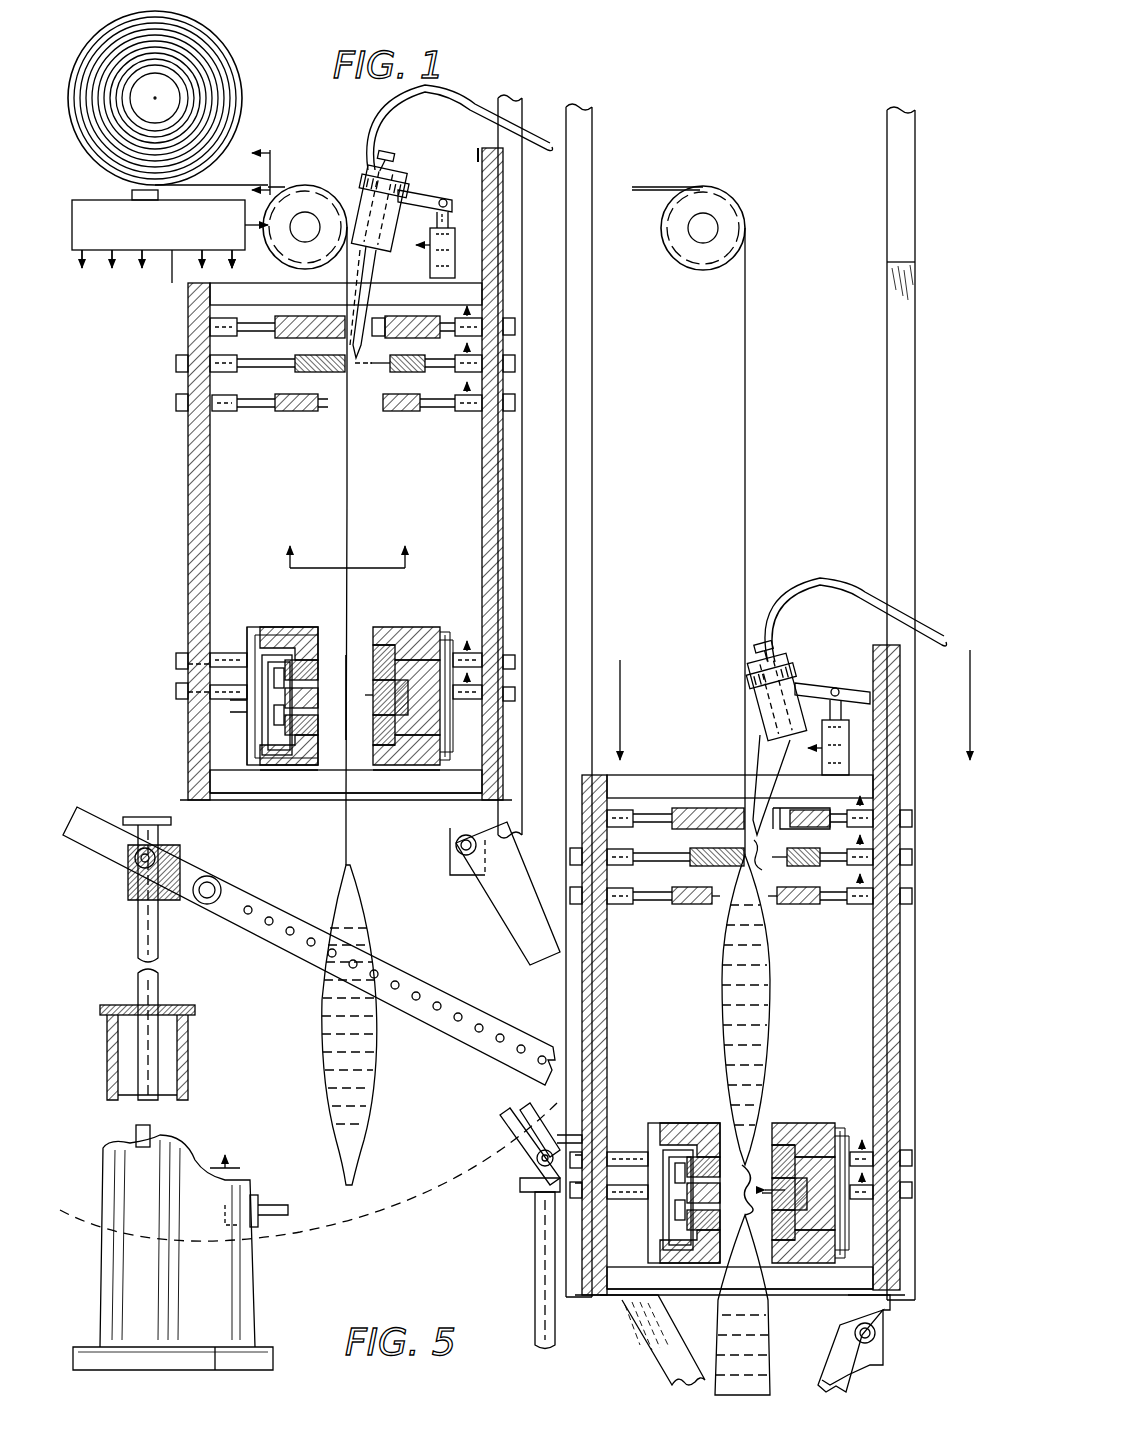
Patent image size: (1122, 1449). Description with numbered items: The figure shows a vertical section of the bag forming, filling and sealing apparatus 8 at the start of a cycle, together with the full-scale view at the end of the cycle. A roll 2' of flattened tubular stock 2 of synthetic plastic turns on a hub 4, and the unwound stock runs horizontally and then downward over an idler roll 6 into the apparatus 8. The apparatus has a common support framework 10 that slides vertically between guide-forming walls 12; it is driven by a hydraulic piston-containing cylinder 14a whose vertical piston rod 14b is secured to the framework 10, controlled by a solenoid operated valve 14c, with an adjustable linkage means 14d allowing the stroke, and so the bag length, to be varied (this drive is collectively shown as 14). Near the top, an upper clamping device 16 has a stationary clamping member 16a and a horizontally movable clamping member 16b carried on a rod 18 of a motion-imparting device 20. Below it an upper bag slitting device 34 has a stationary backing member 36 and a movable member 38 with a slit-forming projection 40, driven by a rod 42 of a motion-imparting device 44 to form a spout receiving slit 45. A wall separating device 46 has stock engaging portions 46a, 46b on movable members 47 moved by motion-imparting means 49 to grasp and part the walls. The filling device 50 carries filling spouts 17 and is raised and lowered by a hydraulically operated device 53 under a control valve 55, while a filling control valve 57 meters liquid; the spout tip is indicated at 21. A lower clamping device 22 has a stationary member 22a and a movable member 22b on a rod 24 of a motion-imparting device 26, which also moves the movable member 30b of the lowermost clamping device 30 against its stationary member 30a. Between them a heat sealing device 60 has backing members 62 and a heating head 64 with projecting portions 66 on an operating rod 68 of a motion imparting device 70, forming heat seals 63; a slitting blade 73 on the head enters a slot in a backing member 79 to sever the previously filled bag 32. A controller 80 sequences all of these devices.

In FIG. 1, the roll 2' is at (151, 98).
In FIG. 1, the hub 4 is at (160, 82).
In FIG. 1, the flattened tubular stock 2 is at (251, 512).
In FIG. 5, the flattened tubular stock 2 is at (795, 521).
In FIG. 1, the idler roll 6 is at (265, 270).
In FIG. 5, the idler roll 6 is at (705, 270).
In FIG. 1, the controller 80 is at (100, 270).
In FIG. 1, the bag forming, filling and sealing apparatus 8 is at (185, 283).
In FIG. 5, the bag forming, filling and sealing apparatus 8 is at (628, 772).
In FIG. 1, the support framework 10 is at (185, 468).
In FIG. 5, the support framework 10 is at (580, 992).
In FIG. 1, the vertical guide-forming walls 12 is at (506, 262).
In FIG. 5, the vertical guide-forming walls 12 is at (592, 495).
In FIG. 1, the motion-imparting device 20 is at (485, 330).
In FIG. 1, the horizontally movable member 38 is at (470, 318).
In FIG. 1, the motion-imparting device 44 is at (470, 355).
In FIG. 1, the armature or rod 42 is at (470, 368).
In FIG. 1, the upper clamping device 16 is at (270, 314).
In FIG. 5, the upper clamping device 16 is at (672, 808).
In FIG. 1, the stationary clamping member 16a is at (326, 310).
In FIG. 1, the horizontally movable clamping member 16b is at (392, 312).
In FIG. 1, the armature or rod 18 is at (455, 335).
In FIG. 1, the upper bag slitting device 34 is at (290, 352).
In FIG. 1, the stationary backing member 36 is at (322, 372).
In FIG. 1, the slit-forming projection 40 is at (400, 368).
In FIG. 1, the filling spouts 17 is at (357, 366).
In FIG. 5, the filling spouts 17 is at (741, 861).
In FIG. 1, the wall separating device 46 is at (275, 392).
In FIG. 5, the wall separating device 46 is at (668, 900).
In FIG. 1, the tubular stock engaging portion 46a is at (316, 412).
In FIG. 5, the tubular stock engaging portion 46a is at (708, 906).
In FIG. 1, the tubular stock engaging portion 46b is at (385, 412).
In FIG. 5, the tubular stock engaging portion 46b is at (788, 906).
In FIG. 1, the movable members 47 is at (250, 412).
In FIG. 1, the motion-imparting means 49 is at (188, 410).
In FIG. 1, the spout receiving slit 45 is at (355, 460).
In FIG. 1, the filling device 50 is at (406, 182).
In FIG. 5, the filling device 50 is at (800, 670).
In FIG. 1, the filling control valve 57 is at (366, 172).
In FIG. 1, the nozzle tip 21 is at (372, 272).
In FIG. 5, the nozzle tip 21 is at (778, 765).
In FIG. 1, the hydraulically operated device 53 is at (470, 248).
In FIG. 5, the hydraulically operated device 53 is at (852, 745).
In FIG. 1, the control valve 55 is at (442, 230).
In FIG. 1, the lower clamping device 22 is at (258, 622).
In FIG. 5, the lower clamping device 22 is at (658, 1120).
In FIG. 1, the stationary clamping member 22a is at (290, 632).
In FIG. 5, the stationary clamping member 22a is at (690, 1125).
In FIG. 1, the horizontally movable clamping member 22b is at (380, 628).
In FIG. 5, the horizontally movable clamping member 22b is at (780, 1125).
In FIG. 1, the heat sealing device 60 is at (255, 640).
In FIG. 1, the stationary backing members 62 is at (316, 630).
In FIG. 1, the heat seals 63 is at (350, 640).
In FIG. 5, the heat seals 63 is at (755, 1190).
In FIG. 1, the heating head 64 is at (448, 640).
In FIG. 1, the heat seal-forming projecting portions 66 is at (375, 668).
In FIG. 1, the armature or operating rod 68 is at (232, 706).
In FIG. 1, the motion imparting device 70 is at (210, 690).
In FIG. 1, the slitting blade 73 is at (373, 700).
In FIG. 1, the stationary backing member 79 is at (262, 735).
In FIG. 1, the armature or rod 24 is at (212, 656).
In FIG. 1, the motion-imparting device 26 is at (212, 686).
In FIG. 1, the lowermost clamping device 30 is at (262, 778).
In FIG. 5, the lowermost clamping device 30 is at (672, 1268).
In FIG. 1, the stationary clamping member 30a is at (332, 780).
In FIG. 1, the horizontally movable clamping member 30b is at (385, 780).
In FIG. 1, the filled bag 32 is at (378, 990).
In FIG. 5, the filled bag 32 is at (722, 1045).
In FIG. 1, the filling station 14 is at (128, 995).
In FIG. 1, the piston-containing cylinder 14a is at (192, 1082).
In FIG. 1, the vertical piston rod 14b is at (160, 940).
In FIG. 1, the solenoid operated valve 14c is at (240, 1165).
In FIG. 1, the adjustable linkage means 14d is at (468, 902).